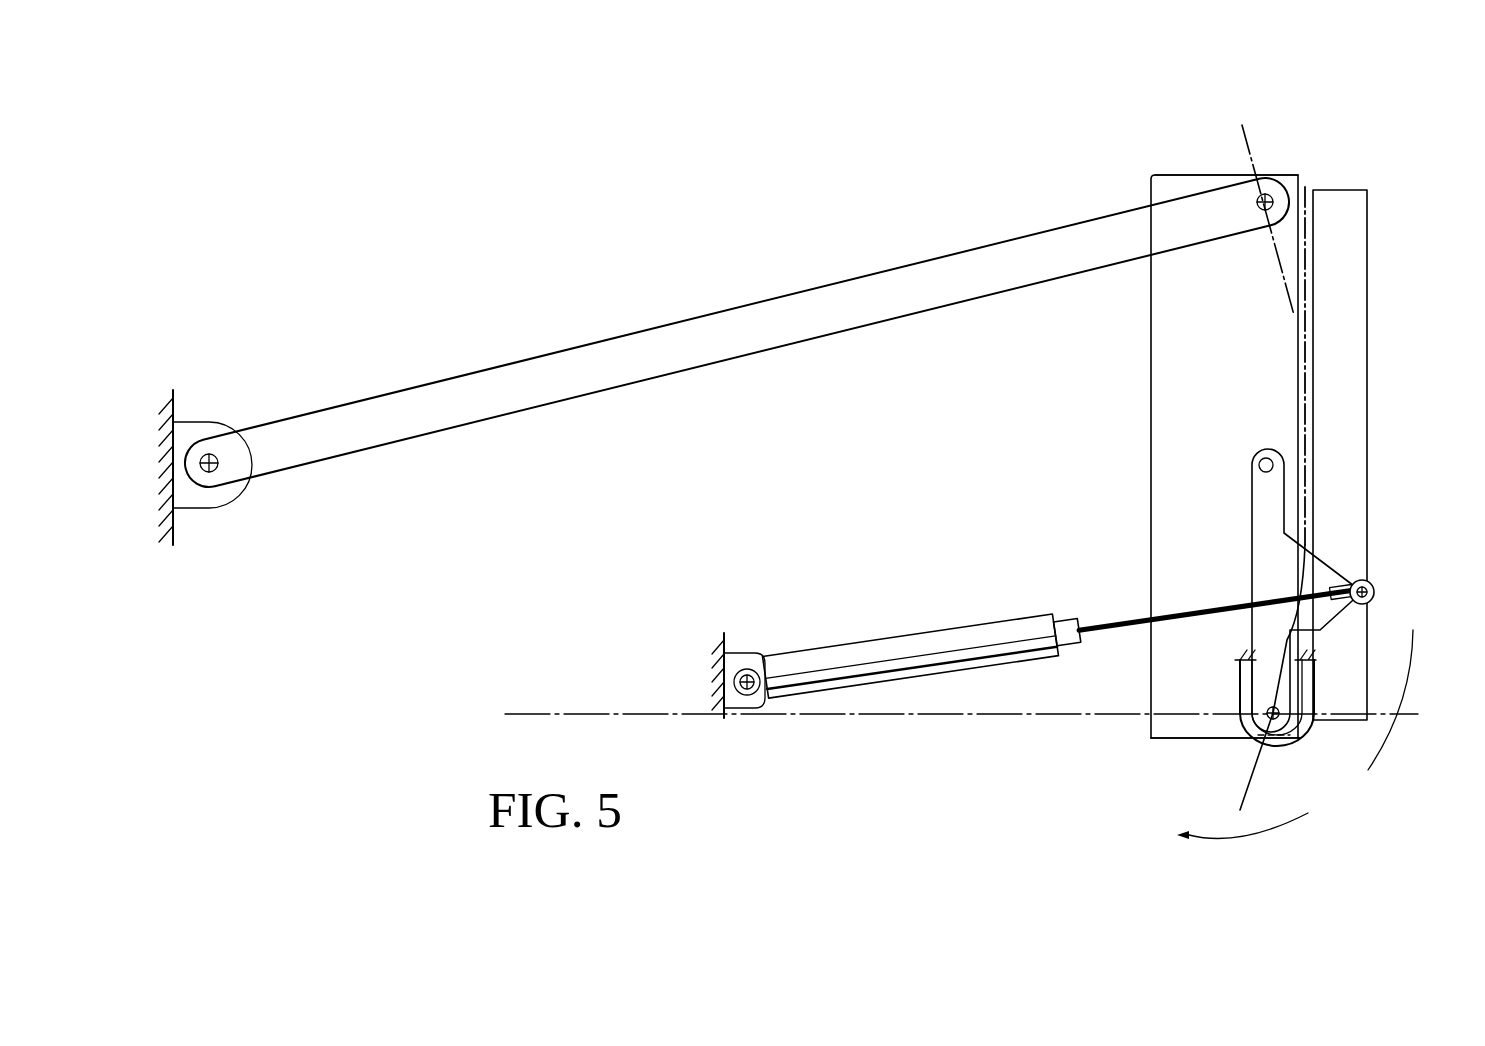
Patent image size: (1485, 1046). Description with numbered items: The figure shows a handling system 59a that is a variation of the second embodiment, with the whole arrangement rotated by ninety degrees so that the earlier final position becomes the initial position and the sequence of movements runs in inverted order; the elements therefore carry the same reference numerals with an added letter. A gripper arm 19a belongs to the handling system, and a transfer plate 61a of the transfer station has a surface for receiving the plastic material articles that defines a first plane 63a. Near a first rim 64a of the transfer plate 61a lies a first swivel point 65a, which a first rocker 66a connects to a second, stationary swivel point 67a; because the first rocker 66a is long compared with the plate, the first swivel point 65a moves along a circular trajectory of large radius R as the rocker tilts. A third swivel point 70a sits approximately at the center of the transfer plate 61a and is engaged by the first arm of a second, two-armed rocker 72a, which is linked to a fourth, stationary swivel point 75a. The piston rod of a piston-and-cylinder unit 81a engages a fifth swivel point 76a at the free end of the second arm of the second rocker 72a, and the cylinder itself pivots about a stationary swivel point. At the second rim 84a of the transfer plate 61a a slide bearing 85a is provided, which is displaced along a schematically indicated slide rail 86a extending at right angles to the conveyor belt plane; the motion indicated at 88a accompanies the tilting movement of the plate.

The handling system 59a is at (737, 289).
The first rocker 66a is at (645, 362).
The second, stationary swivel point 67a is at (218, 452).
The first swivel point 65a is at (1273, 185).
The first rim 64a is at (1168, 178).
The transfer plate 61a is at (1170, 393).
The second rim 84a is at (1166, 748).
The gripper arm 19a is at (1330, 352).
The first plane 63a is at (1307, 277).
The second, two-armed rocker 72a is at (1238, 543).
The third swivel point 70a is at (1266, 457).
The slide bearing 85a is at (1297, 740).
The fourth, stationary swivel point 75a is at (1297, 740).
The piston-and-cylinder unit 81a is at (931, 628).
The fifth swivel point 76a is at (1373, 590).
The slide rail 86a is at (847, 717).
The motion arc 88a is at (1272, 830).
The radius R is at (1275, 314).